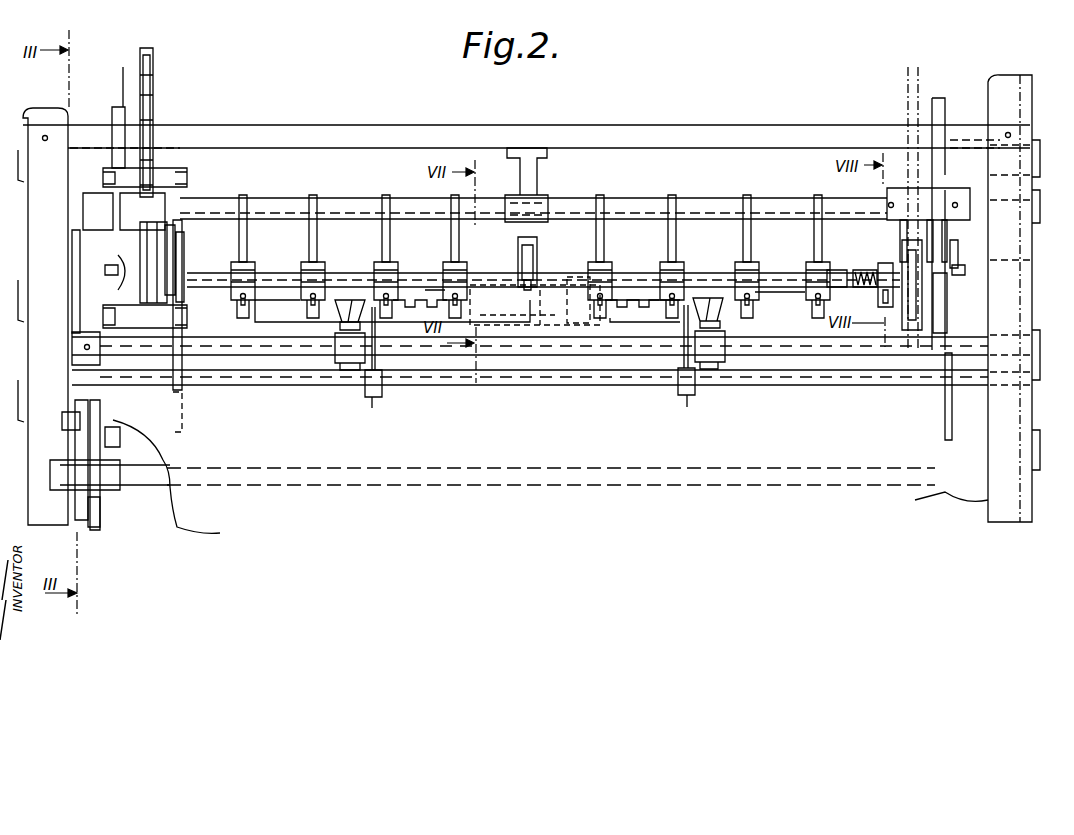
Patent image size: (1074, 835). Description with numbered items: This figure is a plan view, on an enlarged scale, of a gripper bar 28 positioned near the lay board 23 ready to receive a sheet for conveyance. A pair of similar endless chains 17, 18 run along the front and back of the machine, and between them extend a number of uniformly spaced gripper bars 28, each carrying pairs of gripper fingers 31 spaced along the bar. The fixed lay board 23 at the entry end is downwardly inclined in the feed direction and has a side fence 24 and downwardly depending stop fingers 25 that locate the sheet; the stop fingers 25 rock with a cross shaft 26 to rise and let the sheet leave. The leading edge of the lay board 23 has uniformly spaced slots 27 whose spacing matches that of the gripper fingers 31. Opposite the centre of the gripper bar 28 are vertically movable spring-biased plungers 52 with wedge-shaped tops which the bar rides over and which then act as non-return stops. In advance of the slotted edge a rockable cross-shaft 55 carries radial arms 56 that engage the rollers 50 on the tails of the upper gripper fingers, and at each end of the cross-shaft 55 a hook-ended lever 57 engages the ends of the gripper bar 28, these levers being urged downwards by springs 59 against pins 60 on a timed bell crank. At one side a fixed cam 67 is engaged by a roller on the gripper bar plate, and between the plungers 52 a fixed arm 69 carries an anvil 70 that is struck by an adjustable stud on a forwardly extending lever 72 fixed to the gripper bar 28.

The endless chain 17 is at (150, 165).
The endless chain 18 is at (918, 330).
The lay board 23 is at (529, 304).
The side fence 24 is at (860, 280).
The stop fingers 25 is at (335, 318).
The cross shaft 26 is at (288, 358).
The slots 27 is at (240, 322).
The gripper bar 28 is at (355, 269).
The gripper fingers 31 is at (445, 292).
The roller 50 is at (315, 258).
The plungers 52 is at (537, 330).
The cross-shaft 55 is at (270, 200).
The arms 56 is at (308, 235).
The hook-ended lever 57 is at (898, 236).
The springs 59 is at (958, 268).
The pins 60 is at (948, 238).
The fixed cam 67 is at (180, 205).
The fixed arm 69 is at (518, 252).
The anvil 70 is at (535, 243).
The lever 72 is at (538, 280).